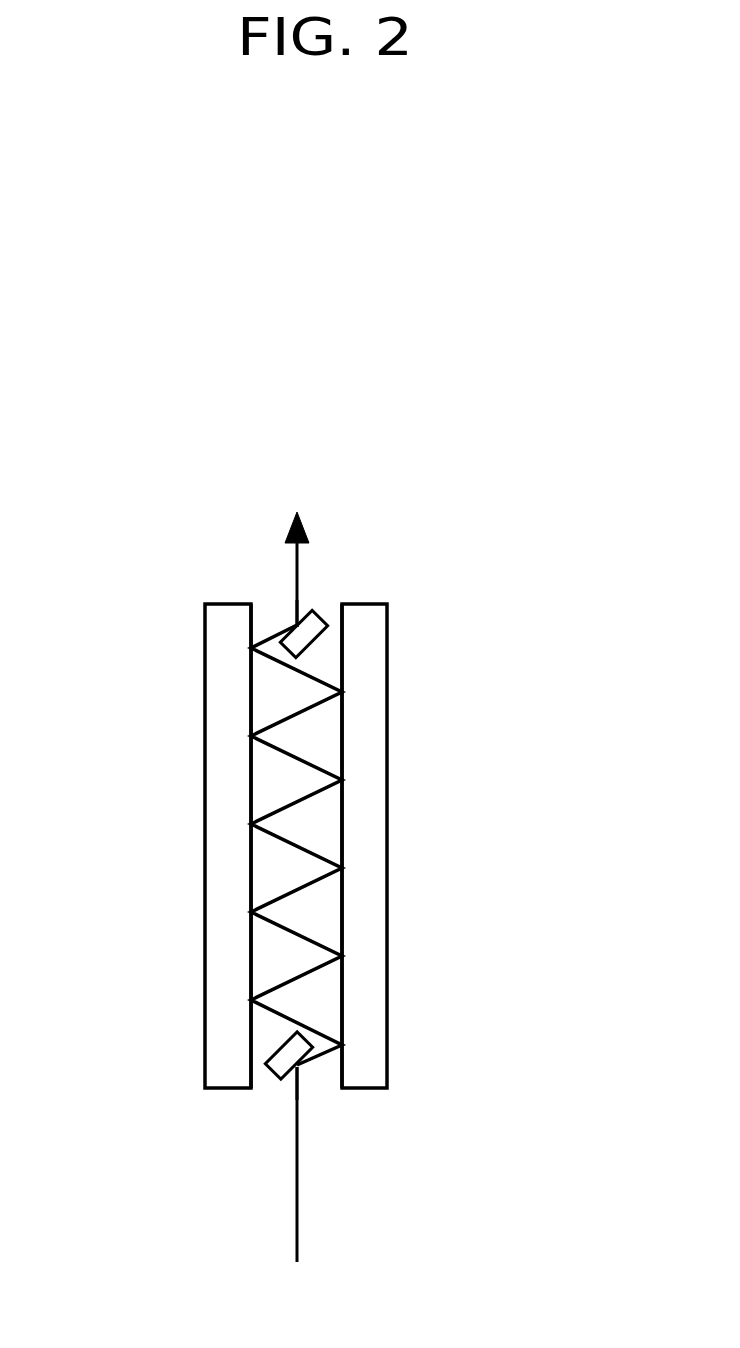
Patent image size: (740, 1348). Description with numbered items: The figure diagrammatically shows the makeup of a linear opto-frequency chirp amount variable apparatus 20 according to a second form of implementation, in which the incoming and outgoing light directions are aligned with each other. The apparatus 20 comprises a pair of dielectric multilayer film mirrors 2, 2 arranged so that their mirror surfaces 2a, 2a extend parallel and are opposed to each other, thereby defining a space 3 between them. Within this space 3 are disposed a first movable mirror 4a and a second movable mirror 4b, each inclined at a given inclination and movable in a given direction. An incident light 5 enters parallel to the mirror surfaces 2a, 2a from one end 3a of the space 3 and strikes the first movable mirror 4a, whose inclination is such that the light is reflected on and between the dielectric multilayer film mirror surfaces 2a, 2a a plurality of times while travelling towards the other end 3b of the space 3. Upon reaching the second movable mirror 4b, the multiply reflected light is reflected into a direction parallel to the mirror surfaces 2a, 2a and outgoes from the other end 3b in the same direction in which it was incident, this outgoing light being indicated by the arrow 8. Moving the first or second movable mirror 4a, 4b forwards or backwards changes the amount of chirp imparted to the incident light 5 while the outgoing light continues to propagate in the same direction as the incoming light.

The dielectric multilayer film mirror 2 is at (230, 952).
The dielectric multilayer film mirror surface 2a is at (250, 865).
The space 3 is at (295, 772).
The one end of the space 3a is at (315, 1092).
The other end of the space 3b is at (322, 595).
The first movable mirror 4a is at (290, 1052).
The second movable mirror 4b is at (310, 633).
The incident light 5 is at (297, 1195).
The output light / exit direction arrow 8 is at (295, 587).
The linear opto-frequency chirp amount variable apparatus 20 is at (622, 568).